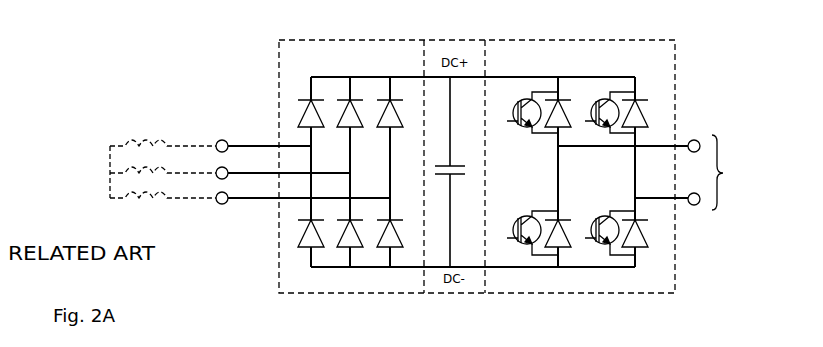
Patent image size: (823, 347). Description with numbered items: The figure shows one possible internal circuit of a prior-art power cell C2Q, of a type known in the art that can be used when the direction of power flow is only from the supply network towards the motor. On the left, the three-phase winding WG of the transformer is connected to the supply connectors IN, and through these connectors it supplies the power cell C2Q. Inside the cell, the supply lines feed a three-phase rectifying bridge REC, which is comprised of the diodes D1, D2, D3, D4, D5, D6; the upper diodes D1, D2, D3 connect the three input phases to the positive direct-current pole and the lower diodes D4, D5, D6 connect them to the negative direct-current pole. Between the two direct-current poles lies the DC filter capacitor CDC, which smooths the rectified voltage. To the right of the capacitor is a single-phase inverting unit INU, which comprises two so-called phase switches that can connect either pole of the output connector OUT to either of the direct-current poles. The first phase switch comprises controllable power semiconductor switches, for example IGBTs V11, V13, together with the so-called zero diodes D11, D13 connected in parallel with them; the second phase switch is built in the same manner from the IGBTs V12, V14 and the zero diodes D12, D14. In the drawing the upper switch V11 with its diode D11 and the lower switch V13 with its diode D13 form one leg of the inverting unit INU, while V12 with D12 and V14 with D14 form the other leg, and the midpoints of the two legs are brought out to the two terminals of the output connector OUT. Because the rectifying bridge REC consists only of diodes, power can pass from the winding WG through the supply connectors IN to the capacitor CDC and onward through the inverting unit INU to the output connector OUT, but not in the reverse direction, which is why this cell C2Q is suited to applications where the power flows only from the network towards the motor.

The power cell C2Q is at (477, 153).
The three-phase rectifying bridge REC is at (347, 58).
The single-phase inverting unit INU is at (557, 59).
The supply connectors IN is at (300, 159).
The three-phase winding WG is at (163, 154).
The diode D1 is at (316, 107).
The diode D2 is at (355, 107).
The diode D3 is at (395, 107).
The diode D4 is at (316, 226).
The diode D5 is at (355, 226).
The diode D6 is at (395, 226).
The DC filter capacitor CDC is at (457, 172).
The output connector OUT is at (660, 172).
The zero diode D11 is at (567, 122).
The zero diode D12 is at (644, 122).
The zero diode D13 is at (567, 242).
The zero diode D14 is at (644, 242).
The controllable power semiconductor switch V11 is at (527, 109).
The controllable power semiconductor switch V12 is at (604, 109).
The controllable power semiconductor switch V13 is at (527, 229).
The controllable power semiconductor switch V14 is at (604, 229).